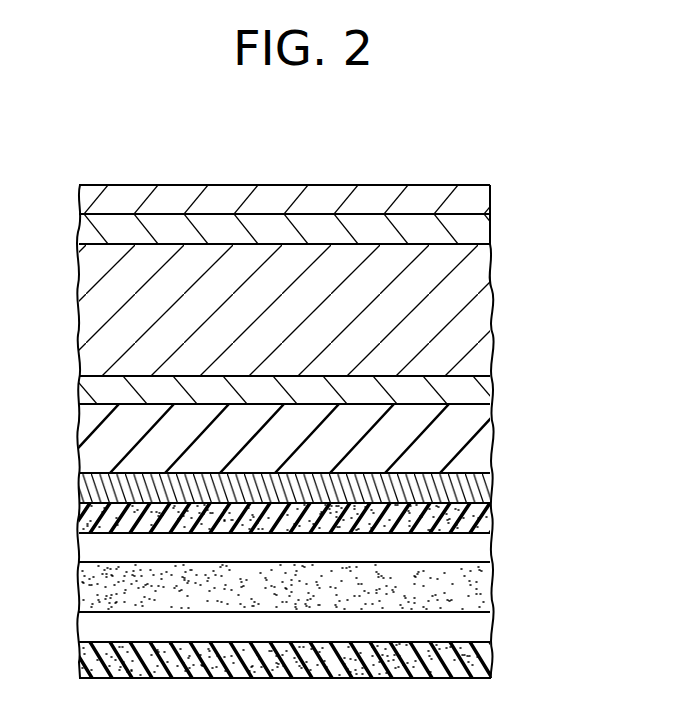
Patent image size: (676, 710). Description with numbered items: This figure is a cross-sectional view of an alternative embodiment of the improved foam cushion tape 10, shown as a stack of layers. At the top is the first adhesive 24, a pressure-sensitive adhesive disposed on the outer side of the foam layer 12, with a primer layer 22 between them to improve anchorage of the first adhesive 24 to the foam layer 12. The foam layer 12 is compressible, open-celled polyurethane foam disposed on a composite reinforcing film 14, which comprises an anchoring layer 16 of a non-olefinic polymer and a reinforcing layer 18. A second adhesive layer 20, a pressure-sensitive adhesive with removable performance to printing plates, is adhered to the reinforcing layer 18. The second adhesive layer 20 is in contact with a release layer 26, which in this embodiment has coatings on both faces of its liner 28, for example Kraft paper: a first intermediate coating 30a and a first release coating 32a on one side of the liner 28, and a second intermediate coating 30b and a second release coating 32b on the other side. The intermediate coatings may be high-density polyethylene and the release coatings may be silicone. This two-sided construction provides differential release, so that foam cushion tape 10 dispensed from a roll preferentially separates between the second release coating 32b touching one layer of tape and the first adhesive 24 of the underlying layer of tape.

The foam cushion tape 10 is at (281, 178).
The foam layer 12 is at (485, 302).
The composite reinforcing film 14 is at (299, 421).
The anchoring layer 16 is at (493, 380).
The reinforcing layer 18 is at (487, 447).
The second adhesive layer 20 is at (492, 482).
The primer layer 22 is at (487, 228).
The first adhesive 24 is at (487, 196).
The release layer 26 is at (302, 590).
The liner 28 is at (485, 588).
The first intermediate coating 30a is at (492, 548).
The second intermediate coating 30b is at (492, 627).
The first release coating 32a is at (492, 517).
The second release coating 32b is at (492, 657).